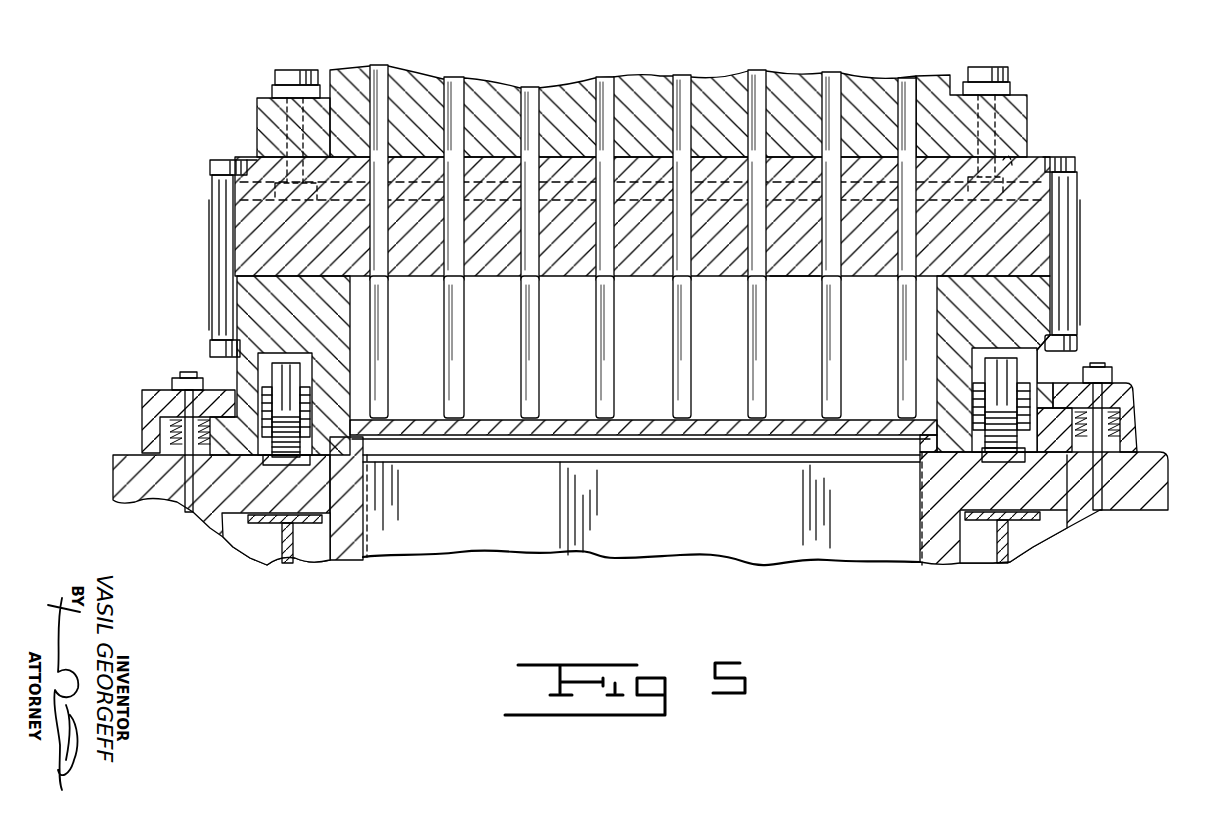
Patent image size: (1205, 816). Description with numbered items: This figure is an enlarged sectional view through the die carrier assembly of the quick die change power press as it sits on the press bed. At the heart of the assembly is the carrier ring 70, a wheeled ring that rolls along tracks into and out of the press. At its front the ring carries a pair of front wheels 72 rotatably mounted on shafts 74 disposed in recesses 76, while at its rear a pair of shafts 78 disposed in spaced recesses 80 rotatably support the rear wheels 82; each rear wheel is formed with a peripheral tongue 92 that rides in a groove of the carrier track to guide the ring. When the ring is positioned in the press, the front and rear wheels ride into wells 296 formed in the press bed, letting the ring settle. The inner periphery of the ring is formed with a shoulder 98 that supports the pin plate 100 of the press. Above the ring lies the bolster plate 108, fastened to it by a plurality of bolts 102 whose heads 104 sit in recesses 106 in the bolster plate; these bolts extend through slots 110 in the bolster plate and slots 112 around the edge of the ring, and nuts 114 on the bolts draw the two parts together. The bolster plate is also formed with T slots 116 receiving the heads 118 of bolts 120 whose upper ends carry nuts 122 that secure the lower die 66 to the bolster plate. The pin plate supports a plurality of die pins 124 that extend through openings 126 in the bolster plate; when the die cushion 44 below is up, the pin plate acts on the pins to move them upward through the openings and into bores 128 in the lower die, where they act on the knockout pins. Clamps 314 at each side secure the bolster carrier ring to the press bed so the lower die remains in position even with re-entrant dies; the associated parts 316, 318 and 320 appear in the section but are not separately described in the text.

The die cushion 44 is at (714, 544).
The lower die 66 is at (1030, 118).
The carrier ring 70 is at (945, 303).
The front wheels 72 is at (276, 539).
The shafts 74 is at (312, 410).
The recesses 76 is at (332, 352).
The shafts 78 is at (1022, 384).
The recesses 80 is at (1024, 350).
The rear wheels 82 is at (992, 368).
The peripheral tongue 92 is at (1007, 458).
The shoulder 98 is at (390, 456).
The pin plate 100 is at (584, 438).
The bolts 102 is at (222, 228).
The heads 104 is at (210, 168).
The recesses 106 is at (250, 160).
The bolster plate 108 is at (793, 277).
The slots 110 is at (215, 262).
The slots 112 is at (212, 305).
The nuts 114 is at (212, 346).
The T slots 116 is at (1022, 162).
The heads 118 is at (976, 206).
The bolts 120 is at (257, 108).
The nuts 122 is at (313, 70).
The die pins 124 is at (388, 372).
The openings 126 is at (384, 280).
The bores 128 is at (688, 78).
The wells 296 is at (278, 465).
The clamps 314 is at (150, 400).
The member 316 is at (1063, 450).
The base end 318 is at (180, 495).
The plate 320 is at (143, 430).